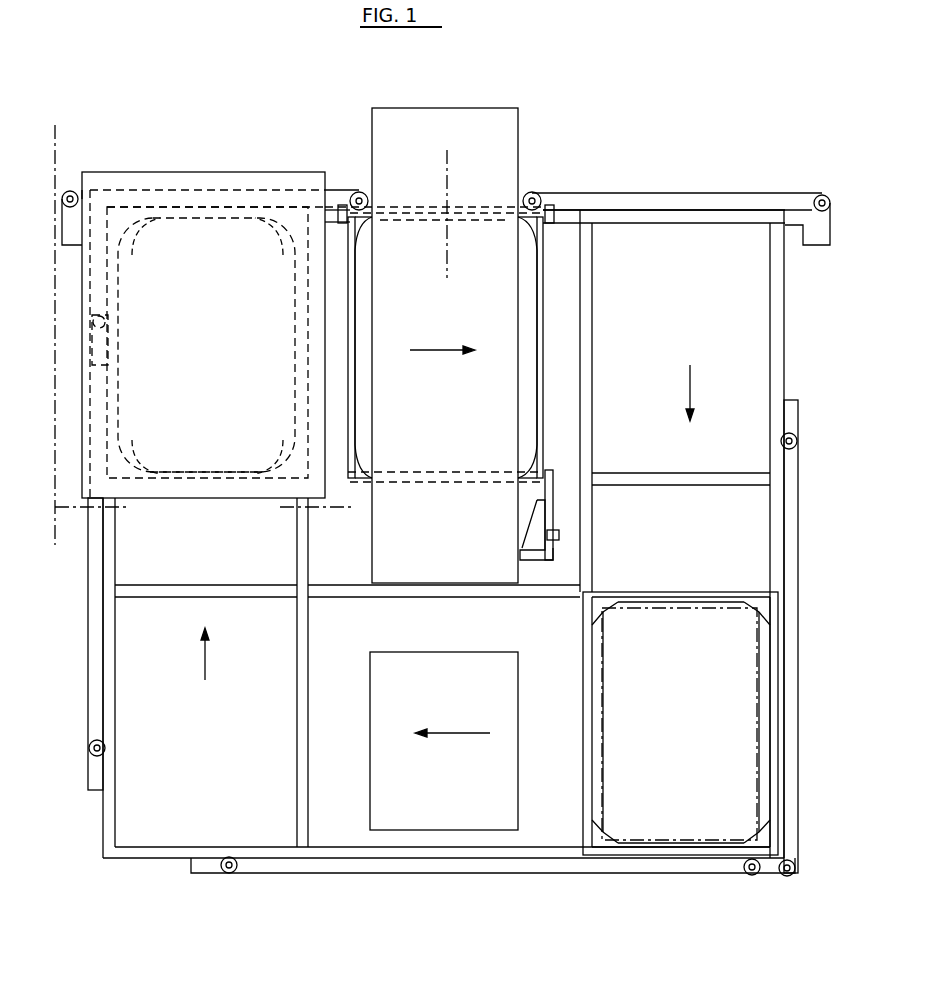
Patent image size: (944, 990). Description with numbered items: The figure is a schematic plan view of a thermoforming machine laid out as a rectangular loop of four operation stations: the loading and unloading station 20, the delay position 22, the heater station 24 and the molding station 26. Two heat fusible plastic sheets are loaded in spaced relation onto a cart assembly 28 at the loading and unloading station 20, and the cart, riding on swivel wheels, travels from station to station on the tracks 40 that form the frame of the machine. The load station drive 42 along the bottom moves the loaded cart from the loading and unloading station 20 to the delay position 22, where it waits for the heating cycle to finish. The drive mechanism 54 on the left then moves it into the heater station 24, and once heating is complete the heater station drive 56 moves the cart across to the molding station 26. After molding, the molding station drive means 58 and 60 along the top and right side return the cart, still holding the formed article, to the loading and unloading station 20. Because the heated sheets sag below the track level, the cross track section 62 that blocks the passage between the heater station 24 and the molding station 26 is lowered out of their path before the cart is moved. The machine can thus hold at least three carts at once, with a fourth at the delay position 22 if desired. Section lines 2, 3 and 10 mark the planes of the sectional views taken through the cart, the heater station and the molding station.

The loading and unloading station 20 is at (705, 735).
The delay position 22 is at (230, 735).
The heater station 24 is at (228, 355).
The molding station 26 is at (458, 331).
The cart assembly 28 is at (780, 858).
The tracks 40 is at (655, 224).
The load station drive 42 is at (345, 875).
The drive mechanism 54 is at (88, 640).
The heater station drive 56 is at (345, 190).
The molding station drive means 58 is at (650, 193).
The molding station drive means 60 is at (804, 460).
The cross track section 62 is at (292, 457).
The section line 2- 2 is at (62, 514).
The section line 3- 3 is at (50, 143).
The section line 10- 10 is at (440, 165).